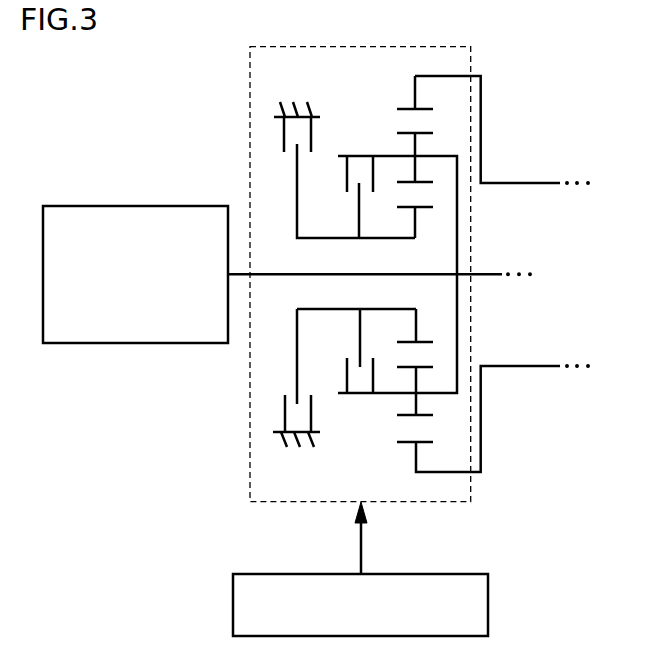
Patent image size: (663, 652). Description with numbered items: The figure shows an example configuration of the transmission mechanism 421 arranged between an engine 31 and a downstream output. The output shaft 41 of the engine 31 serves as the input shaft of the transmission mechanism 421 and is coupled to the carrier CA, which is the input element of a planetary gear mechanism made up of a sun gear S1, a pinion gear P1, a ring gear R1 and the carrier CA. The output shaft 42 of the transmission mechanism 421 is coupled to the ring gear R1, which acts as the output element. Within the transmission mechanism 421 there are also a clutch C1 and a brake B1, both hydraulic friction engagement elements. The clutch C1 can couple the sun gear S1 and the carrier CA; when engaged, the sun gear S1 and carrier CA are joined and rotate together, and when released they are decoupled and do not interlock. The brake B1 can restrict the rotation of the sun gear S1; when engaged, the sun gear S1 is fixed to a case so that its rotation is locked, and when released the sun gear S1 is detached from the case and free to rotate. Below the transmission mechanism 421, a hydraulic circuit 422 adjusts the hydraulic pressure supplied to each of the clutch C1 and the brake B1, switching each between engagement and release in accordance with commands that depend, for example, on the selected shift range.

The engine 31 is at (172, 205).
The output shaft 41 is at (493, 276).
The output shaft 42 is at (531, 185).
The transmission mechanism 421 is at (432, 46).
The hydraulic circuit 422 is at (423, 573).
The ring gear R1 is at (414, 107).
The pinion gear P1 is at (413, 133).
The sun gear S1 is at (413, 208).
The carrier CA is at (456, 252).
The clutch C1 is at (346, 186).
The brake B1 is at (283, 133).